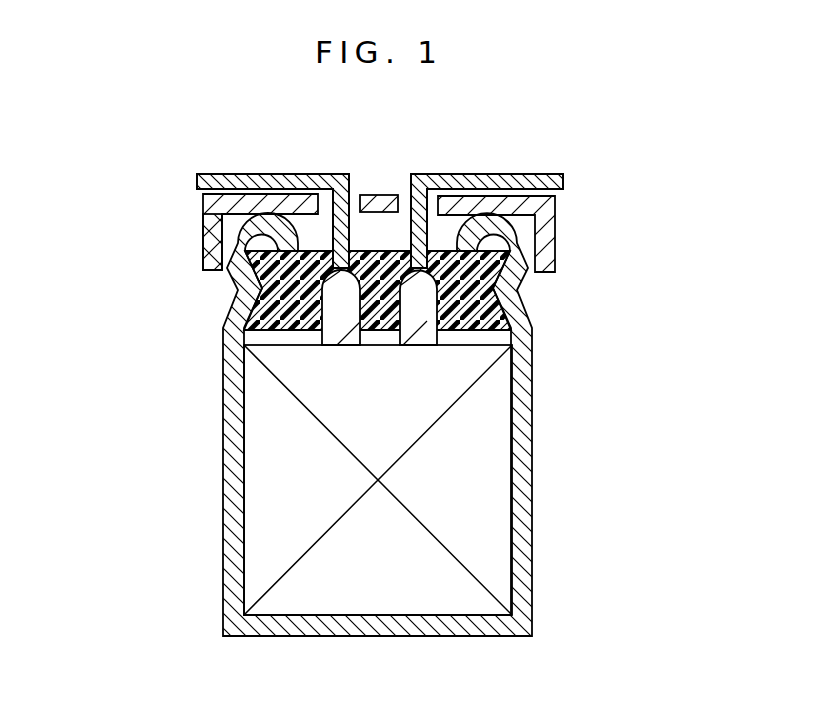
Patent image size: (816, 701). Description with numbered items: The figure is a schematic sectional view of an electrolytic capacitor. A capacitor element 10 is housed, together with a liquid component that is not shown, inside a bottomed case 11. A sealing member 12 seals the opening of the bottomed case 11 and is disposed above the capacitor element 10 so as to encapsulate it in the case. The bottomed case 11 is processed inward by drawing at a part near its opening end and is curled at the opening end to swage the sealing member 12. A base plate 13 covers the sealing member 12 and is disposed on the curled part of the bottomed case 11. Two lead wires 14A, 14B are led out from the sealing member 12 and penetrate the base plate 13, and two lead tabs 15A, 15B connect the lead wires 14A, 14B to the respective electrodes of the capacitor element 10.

The capacitor element 10 is at (280, 460).
The bottomed case 11 is at (525, 433).
The sealing member 12 is at (472, 298).
The base plate 13 is at (213, 215).
The lead wire 14A is at (270, 178).
The lead wire 14B is at (495, 182).
The lead tab 15A is at (340, 300).
The lead tab 15B is at (417, 320).